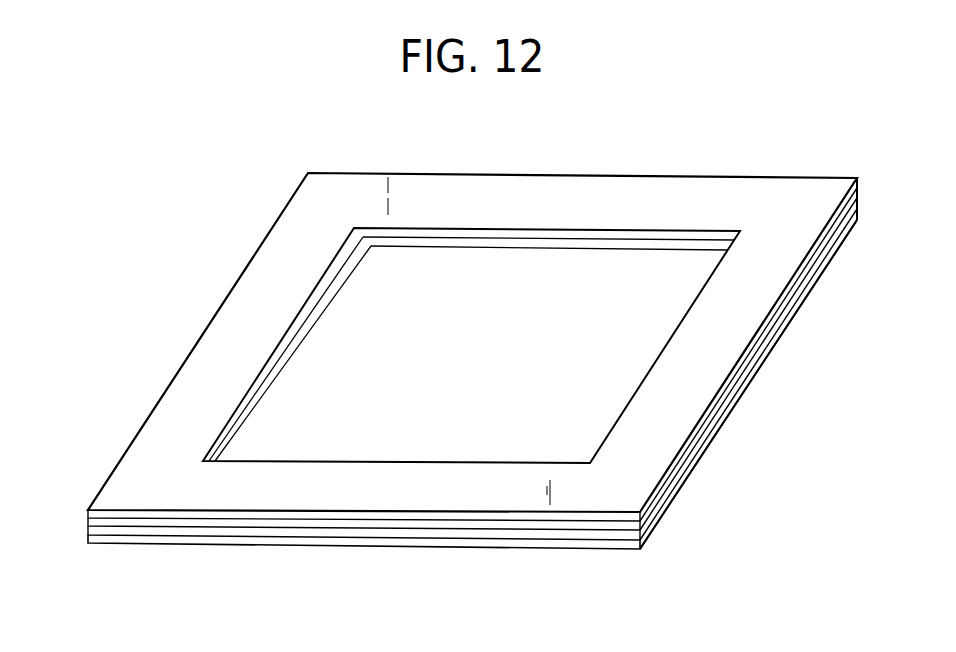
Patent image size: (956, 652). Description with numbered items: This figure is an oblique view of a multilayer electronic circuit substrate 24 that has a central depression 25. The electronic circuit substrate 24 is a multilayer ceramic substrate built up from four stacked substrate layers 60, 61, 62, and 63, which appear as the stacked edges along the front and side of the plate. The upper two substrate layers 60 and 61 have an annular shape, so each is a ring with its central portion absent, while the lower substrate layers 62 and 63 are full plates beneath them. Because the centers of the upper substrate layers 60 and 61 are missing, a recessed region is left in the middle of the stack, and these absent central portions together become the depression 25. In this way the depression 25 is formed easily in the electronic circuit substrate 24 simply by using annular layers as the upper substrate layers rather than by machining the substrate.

The electronic circuit substrate 24 is at (188, 288).
The depression 25 is at (538, 325).
The substrate layer 60 is at (88, 514).
The substrate layer 61 is at (88, 522).
The substrate layer 62 is at (88, 531).
The substrate layer 63 is at (88, 540).